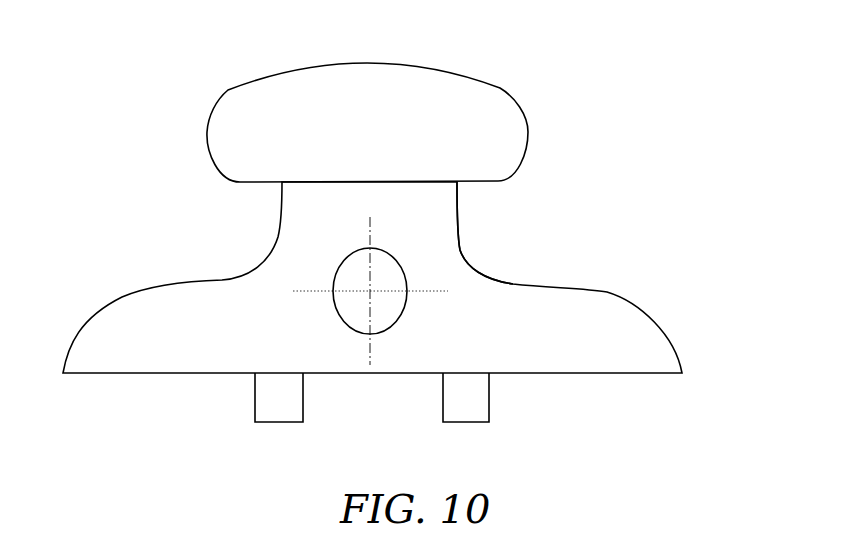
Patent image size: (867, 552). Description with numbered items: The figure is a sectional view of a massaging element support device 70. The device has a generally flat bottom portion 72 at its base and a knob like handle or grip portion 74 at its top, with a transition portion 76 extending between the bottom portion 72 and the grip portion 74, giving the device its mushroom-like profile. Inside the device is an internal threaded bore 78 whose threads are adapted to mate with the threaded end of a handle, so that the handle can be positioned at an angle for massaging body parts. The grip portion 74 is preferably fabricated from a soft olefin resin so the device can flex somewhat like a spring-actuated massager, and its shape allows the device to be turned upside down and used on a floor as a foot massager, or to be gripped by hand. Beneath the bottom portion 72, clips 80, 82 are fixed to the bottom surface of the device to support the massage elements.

The massaging element support device 70 is at (582, 73).
The bottom portion 72 is at (113, 374).
The knob like handle or grip portion 74 is at (408, 68).
The transition portion 76 is at (460, 226).
The internal threaded bore 78 is at (395, 304).
The clip 80 is at (255, 401).
The clip 82 is at (490, 401).